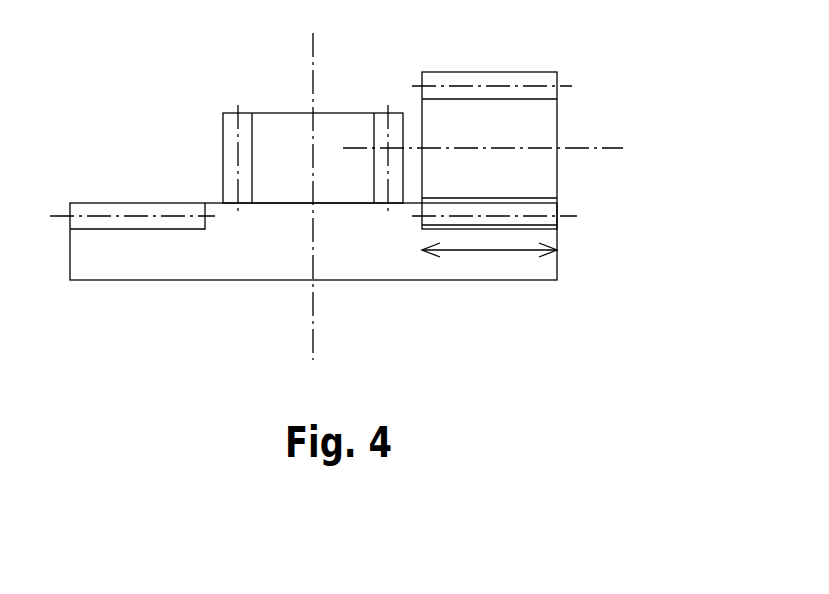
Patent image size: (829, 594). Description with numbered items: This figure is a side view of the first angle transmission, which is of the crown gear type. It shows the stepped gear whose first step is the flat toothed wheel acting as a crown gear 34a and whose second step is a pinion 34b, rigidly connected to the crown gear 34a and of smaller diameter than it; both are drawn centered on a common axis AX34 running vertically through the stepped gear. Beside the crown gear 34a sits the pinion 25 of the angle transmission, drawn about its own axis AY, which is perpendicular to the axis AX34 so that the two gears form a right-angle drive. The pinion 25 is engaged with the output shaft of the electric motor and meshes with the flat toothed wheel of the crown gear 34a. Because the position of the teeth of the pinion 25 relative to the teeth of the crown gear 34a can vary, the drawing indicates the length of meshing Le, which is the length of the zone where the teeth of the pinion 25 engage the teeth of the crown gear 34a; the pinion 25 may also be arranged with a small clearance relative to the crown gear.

The crown gear 34a is at (176, 280).
The pinion 34b is at (282, 130).
The pinion 25 is at (479, 70).
The axis of shaft 34 AX34 is at (313, 68).
The axis of member 25 AY is at (582, 148).
The length of meshing Le is at (490, 252).